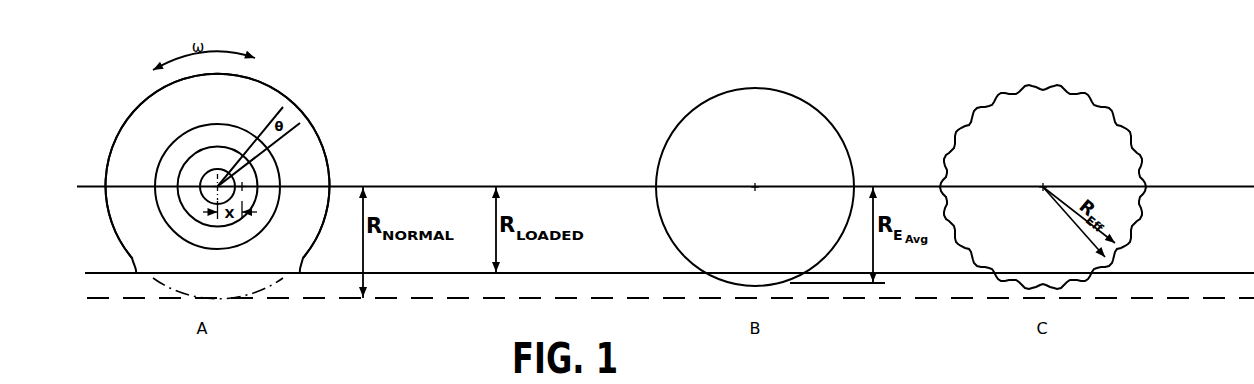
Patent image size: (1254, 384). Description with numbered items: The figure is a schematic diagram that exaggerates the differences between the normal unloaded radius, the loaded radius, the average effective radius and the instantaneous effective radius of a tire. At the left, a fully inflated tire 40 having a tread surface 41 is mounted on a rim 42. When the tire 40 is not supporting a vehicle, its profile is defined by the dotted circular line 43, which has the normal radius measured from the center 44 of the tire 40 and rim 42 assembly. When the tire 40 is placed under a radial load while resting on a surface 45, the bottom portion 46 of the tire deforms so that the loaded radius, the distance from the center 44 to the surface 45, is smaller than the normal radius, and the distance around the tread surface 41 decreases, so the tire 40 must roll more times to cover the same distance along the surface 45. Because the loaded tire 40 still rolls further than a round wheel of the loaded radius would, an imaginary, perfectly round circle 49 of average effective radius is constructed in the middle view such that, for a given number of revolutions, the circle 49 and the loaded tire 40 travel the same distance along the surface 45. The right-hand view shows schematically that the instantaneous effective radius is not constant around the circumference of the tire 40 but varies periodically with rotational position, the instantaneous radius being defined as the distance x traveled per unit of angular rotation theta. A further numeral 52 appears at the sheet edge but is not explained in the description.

The tire 40 is at (317, 167).
The tread surface 41 is at (275, 88).
The rim 42 is at (278, 165).
The dotted circular line 43 is at (165, 285).
The center 44 is at (213, 183).
The surface 45 is at (108, 272).
The bottom portion 46 is at (227, 273).
The imaginary perfectly round circle 49 is at (807, 102).
The road surface 52 is at (481, 379).